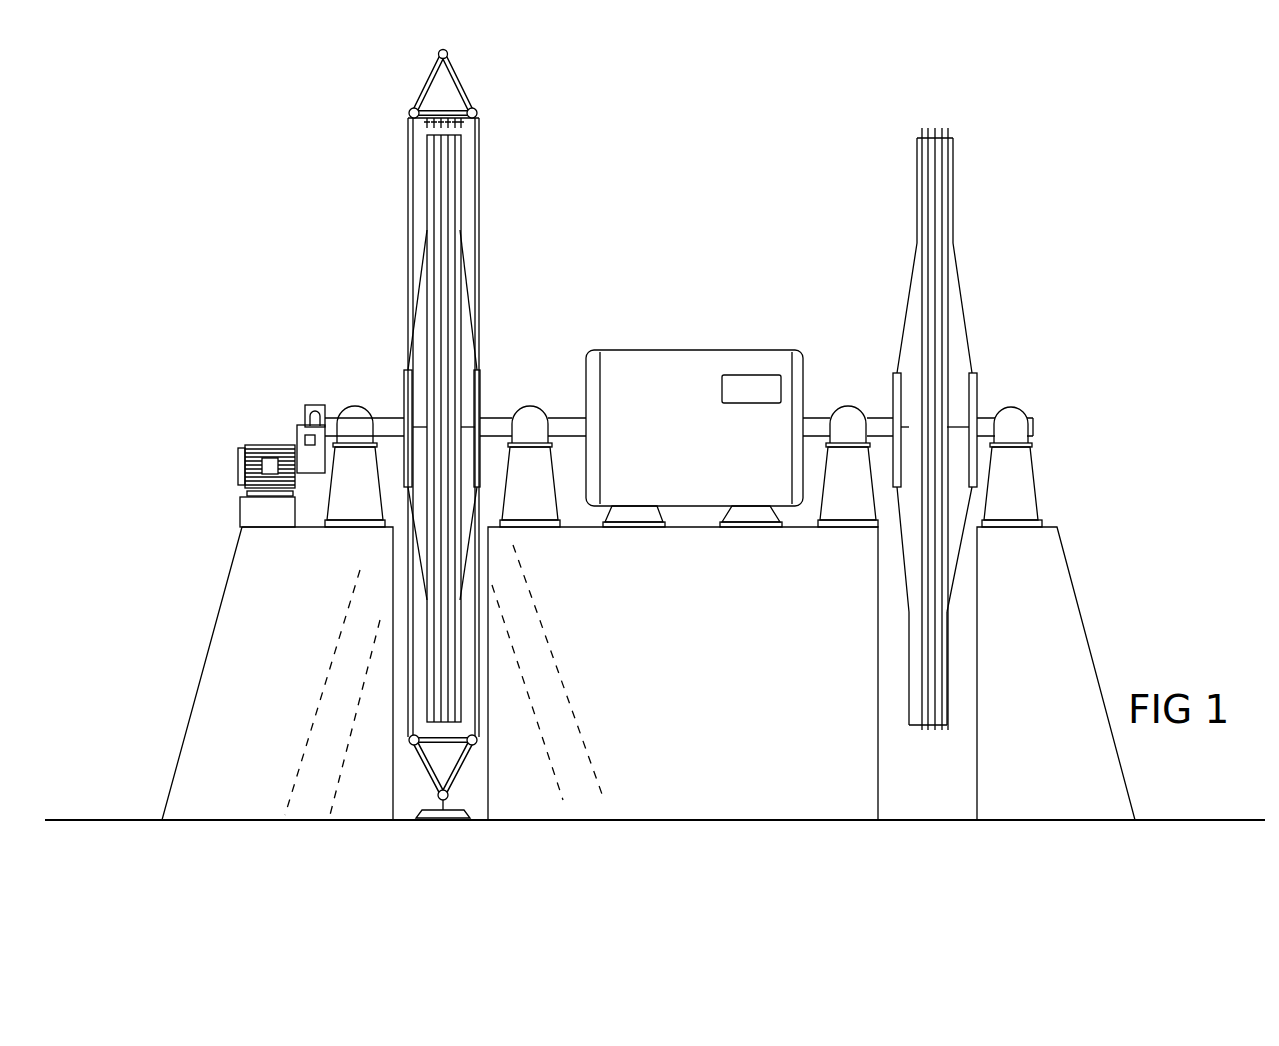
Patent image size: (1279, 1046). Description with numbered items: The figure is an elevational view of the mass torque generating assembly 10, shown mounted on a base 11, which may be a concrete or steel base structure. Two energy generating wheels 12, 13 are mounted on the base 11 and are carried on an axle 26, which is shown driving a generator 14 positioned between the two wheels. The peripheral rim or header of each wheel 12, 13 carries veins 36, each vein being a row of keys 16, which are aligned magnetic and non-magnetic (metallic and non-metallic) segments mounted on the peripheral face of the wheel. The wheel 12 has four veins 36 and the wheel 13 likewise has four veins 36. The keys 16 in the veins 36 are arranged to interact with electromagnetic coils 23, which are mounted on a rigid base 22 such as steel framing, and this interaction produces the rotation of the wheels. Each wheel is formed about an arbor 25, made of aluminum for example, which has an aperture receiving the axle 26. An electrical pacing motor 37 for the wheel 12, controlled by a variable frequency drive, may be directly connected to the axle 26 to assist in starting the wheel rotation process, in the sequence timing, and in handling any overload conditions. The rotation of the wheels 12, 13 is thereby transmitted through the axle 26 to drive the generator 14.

The mass torque generating assembly 10 is at (1066, 239).
The base 11 is at (222, 578).
The energy generating wheel 12 is at (423, 173).
The energy generating wheel 13 is at (953, 164).
The generator 14 is at (691, 369).
The keys 16 is at (465, 182).
The rigid base 22 is at (425, 79).
The electromagnetic coils 23 is at (463, 125).
The arbor 25 is at (405, 367).
The axle 26 is at (388, 415).
The veins 36 is at (440, 261).
The electrical pacing motor 37 is at (265, 441).